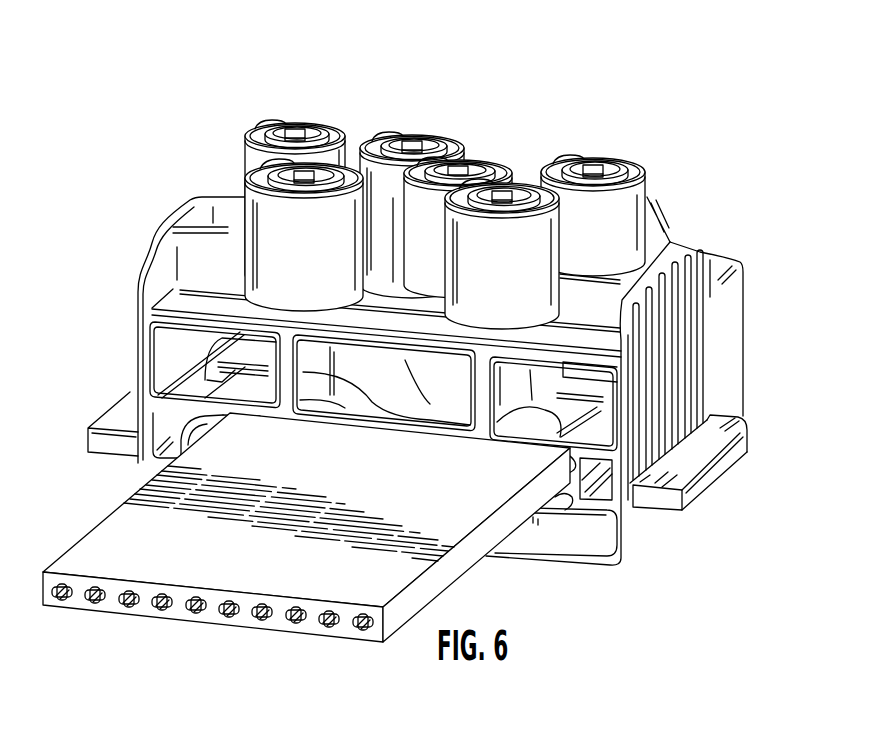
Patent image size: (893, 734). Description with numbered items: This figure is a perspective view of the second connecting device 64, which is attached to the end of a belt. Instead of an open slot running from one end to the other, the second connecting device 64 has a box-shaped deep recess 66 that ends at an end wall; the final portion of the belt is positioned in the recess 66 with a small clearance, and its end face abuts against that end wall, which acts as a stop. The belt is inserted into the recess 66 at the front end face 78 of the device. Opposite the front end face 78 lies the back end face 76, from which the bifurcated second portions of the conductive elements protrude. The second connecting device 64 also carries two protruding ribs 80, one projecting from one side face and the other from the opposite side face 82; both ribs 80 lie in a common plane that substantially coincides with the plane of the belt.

The second connecting device 64 is at (420, 349).
The box-shaped deep recess 66 is at (62, 601).
The back end face 76 is at (440, 342).
The front end face 78 is at (622, 560).
The protruding ribs 80 is at (119, 418).
The side face 82 is at (677, 397).